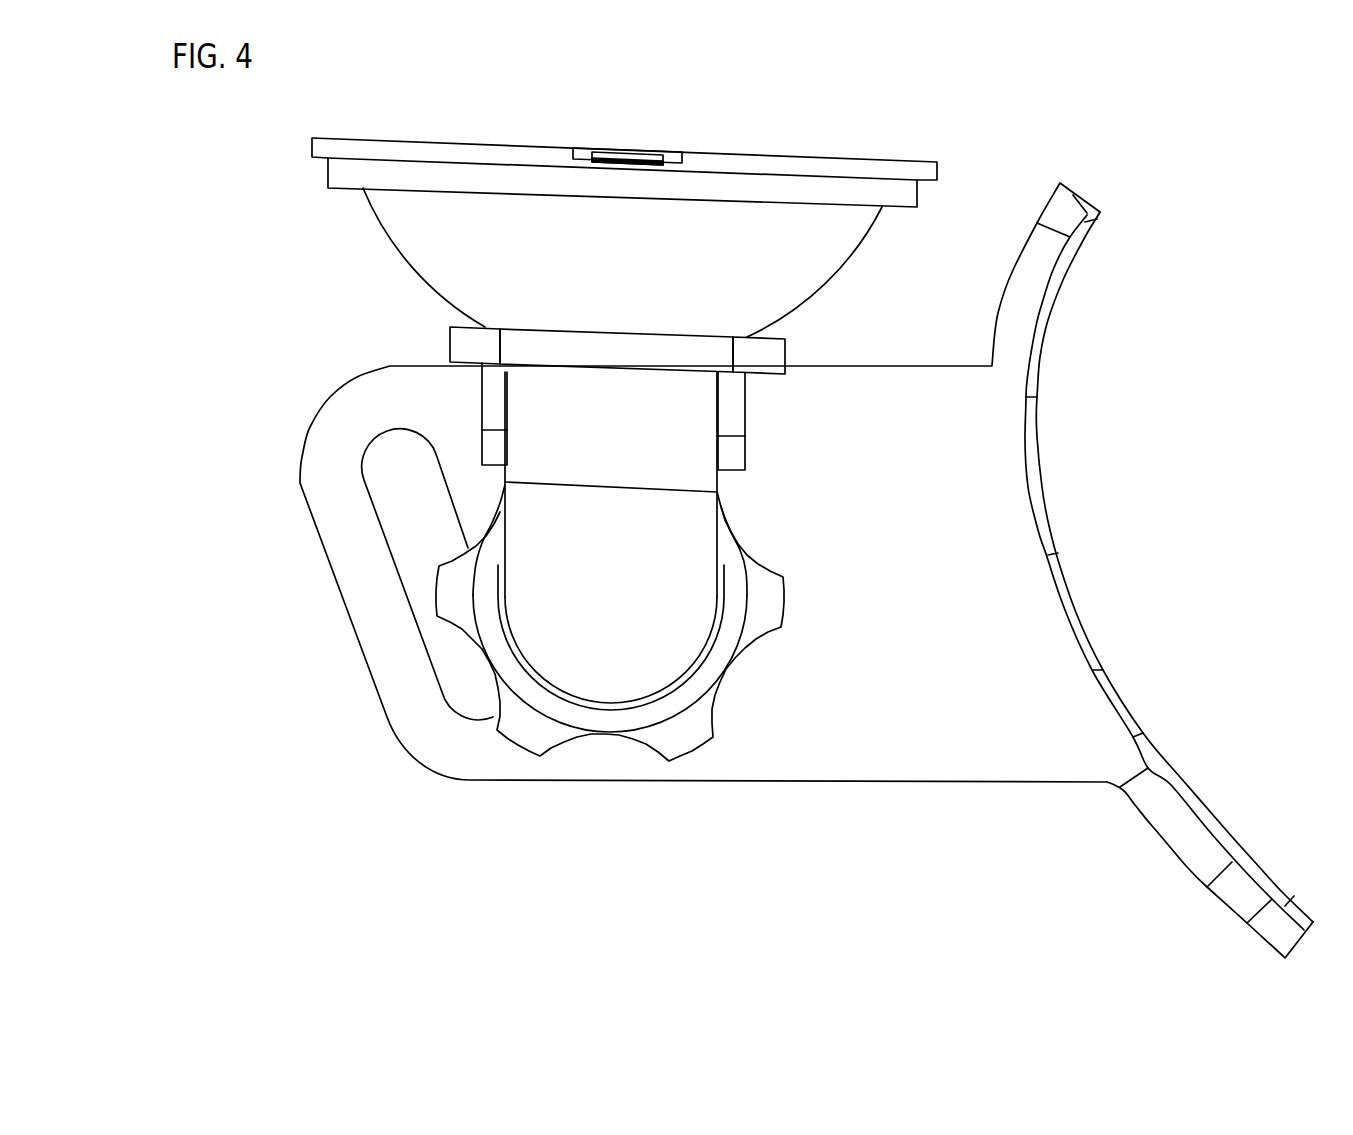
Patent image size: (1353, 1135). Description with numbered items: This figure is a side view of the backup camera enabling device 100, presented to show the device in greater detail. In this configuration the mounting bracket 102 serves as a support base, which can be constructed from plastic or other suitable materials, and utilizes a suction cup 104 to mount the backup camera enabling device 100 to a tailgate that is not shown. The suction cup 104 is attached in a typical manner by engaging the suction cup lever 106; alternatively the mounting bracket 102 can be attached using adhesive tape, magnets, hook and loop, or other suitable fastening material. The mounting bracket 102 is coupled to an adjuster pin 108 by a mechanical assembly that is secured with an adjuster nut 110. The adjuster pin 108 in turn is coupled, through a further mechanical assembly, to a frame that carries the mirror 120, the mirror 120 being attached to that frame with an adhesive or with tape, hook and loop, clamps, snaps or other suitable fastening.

The backup camera enabling device 100 is at (277, 240).
The mounting bracket 102 is at (397, 253).
The suction cup 104 is at (560, 142).
The suction cup lever 106 is at (788, 343).
The adjuster pin 108 is at (817, 782).
The adjuster nut 110 is at (537, 752).
The mirror 120 is at (1092, 643).